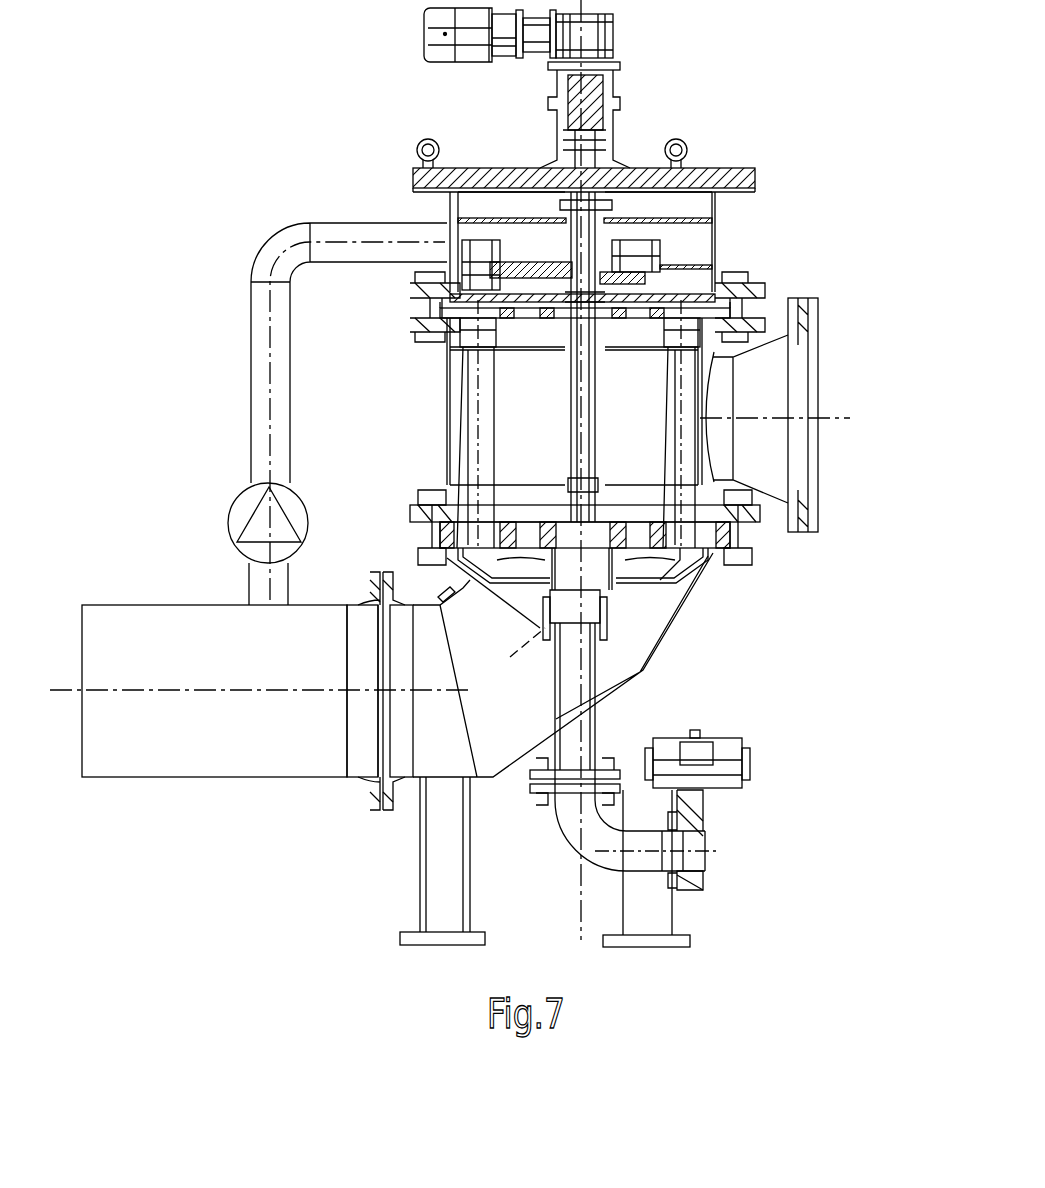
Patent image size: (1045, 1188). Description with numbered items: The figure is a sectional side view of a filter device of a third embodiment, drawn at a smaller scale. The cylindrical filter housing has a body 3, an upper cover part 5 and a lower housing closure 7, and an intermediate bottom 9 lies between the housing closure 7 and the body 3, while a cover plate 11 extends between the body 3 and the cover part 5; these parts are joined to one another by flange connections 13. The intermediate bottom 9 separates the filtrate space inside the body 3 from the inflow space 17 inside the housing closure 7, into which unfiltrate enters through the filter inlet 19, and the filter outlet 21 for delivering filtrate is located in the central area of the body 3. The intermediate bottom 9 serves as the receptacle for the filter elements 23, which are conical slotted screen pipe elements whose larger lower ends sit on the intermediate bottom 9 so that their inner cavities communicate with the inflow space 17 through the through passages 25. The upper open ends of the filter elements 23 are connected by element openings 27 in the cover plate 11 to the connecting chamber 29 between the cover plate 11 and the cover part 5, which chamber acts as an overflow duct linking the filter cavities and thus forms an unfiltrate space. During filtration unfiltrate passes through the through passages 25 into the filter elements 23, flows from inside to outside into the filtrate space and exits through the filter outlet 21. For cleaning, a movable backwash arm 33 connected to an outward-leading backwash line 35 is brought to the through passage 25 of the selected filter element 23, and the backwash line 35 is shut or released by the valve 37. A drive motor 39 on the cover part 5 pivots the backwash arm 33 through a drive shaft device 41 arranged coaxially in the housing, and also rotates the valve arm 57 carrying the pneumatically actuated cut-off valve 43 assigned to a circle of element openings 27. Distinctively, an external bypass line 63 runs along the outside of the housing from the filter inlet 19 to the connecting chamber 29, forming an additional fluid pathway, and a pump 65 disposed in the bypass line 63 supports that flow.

The body 3 is at (604, 339).
The upper cover part 5 is at (703, 175).
The lower housing closure 7 is at (677, 610).
The intermediate bottom 9 is at (700, 528).
The cover plate 11 is at (437, 293).
The flange connections 13 is at (737, 313).
The inflow space 17 is at (572, 640).
The filter inlet 19 is at (345, 615).
The filter outlet 21 is at (780, 497).
The filter elements 23 is at (497, 423).
The through passages 25 is at (528, 388).
The element openings 27 is at (497, 323).
The connecting chamber 29 is at (692, 283).
The backwash arm 33 is at (508, 582).
The backwash line 35 is at (587, 730).
The valve 37 is at (705, 793).
The drive motor 39 is at (532, 40).
The drive shaft device 41 is at (590, 417).
The cut-off valve 43 is at (478, 252).
The valve arm 57 is at (515, 262).
The bypass line 63 is at (250, 360).
The pump 65 is at (247, 513).